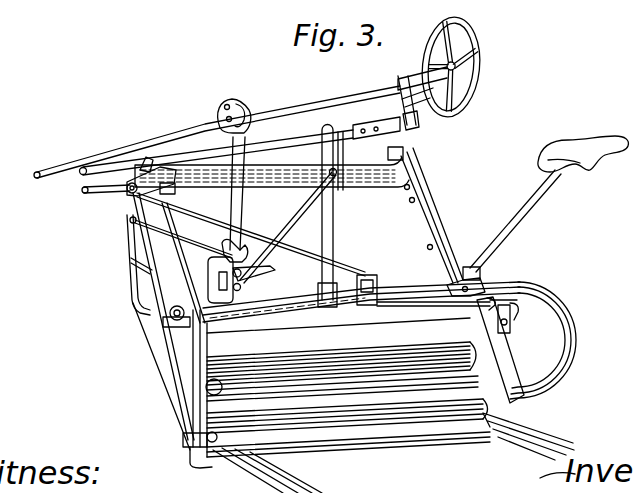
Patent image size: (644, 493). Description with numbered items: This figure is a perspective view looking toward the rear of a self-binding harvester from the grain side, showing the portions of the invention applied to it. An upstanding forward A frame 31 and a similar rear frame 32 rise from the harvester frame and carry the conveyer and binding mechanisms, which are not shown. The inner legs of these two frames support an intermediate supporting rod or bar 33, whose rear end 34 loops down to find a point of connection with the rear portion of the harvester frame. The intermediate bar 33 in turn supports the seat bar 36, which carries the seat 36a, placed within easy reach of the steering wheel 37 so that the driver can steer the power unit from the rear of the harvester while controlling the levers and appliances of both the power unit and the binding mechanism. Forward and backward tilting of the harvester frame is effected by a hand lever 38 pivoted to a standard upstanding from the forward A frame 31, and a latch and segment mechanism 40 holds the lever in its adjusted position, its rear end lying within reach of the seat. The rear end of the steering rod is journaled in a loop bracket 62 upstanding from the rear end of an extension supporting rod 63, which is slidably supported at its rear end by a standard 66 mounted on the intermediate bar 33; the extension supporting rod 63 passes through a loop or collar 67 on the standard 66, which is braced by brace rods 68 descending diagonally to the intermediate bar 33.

The forward A frame 31 is at (128, 255).
The rear frame 32 is at (422, 227).
The intermediate supporting rod or bar 33 is at (402, 284).
The rear end of intermediate bar 34 is at (574, 313).
The seat bar 36 is at (515, 226).
The seat 36a is at (583, 170).
The steering wheel 37 is at (478, 68).
The hand lever 38 is at (308, 127).
The latch and segment mechanism 40 is at (173, 196).
The loop bracket 62 is at (413, 111).
The extension supporting rod 63 is at (318, 143).
The standard 66 is at (334, 218).
The loop or collar 67 is at (337, 152).
The brace rods 68 is at (279, 225).